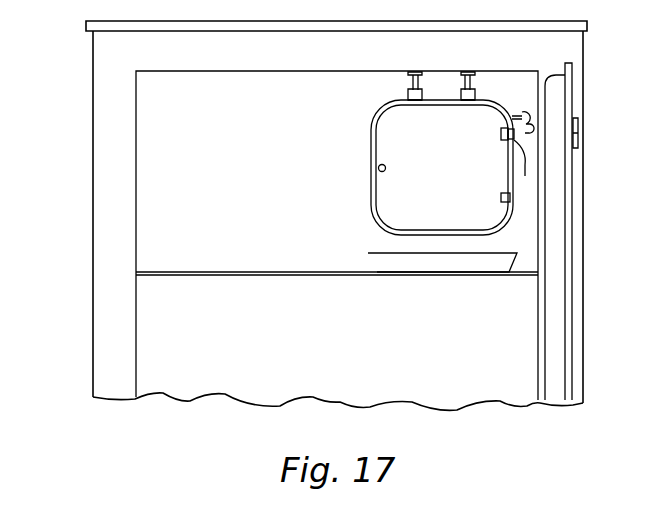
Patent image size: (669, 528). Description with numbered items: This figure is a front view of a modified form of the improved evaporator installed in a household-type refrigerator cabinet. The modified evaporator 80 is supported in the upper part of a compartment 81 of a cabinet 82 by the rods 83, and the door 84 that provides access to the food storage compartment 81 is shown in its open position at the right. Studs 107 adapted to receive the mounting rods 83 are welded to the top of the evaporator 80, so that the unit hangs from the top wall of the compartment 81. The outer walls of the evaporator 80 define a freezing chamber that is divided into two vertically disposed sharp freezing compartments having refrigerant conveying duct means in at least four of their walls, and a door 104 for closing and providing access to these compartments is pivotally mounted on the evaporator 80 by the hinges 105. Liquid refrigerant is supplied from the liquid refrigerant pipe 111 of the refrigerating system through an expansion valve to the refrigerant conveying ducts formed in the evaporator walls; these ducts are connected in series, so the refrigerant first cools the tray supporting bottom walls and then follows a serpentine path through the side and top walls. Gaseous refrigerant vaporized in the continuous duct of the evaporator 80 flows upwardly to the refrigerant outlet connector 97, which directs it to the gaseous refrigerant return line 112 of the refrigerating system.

The cabinet 82 is at (100, 112).
The compartment 81 is at (140, 175).
The door 84 is at (557, 205).
The modified evaporator 80 is at (412, 167).
The door 104 is at (391, 185).
The rods 83 is at (410, 83).
The studs 107 is at (423, 97).
The hinges 105 is at (500, 134).
The liquid refrigerant pipe 111 is at (512, 116).
The gaseous refrigerant return line 112 is at (532, 128).
The connector 97 is at (526, 167).